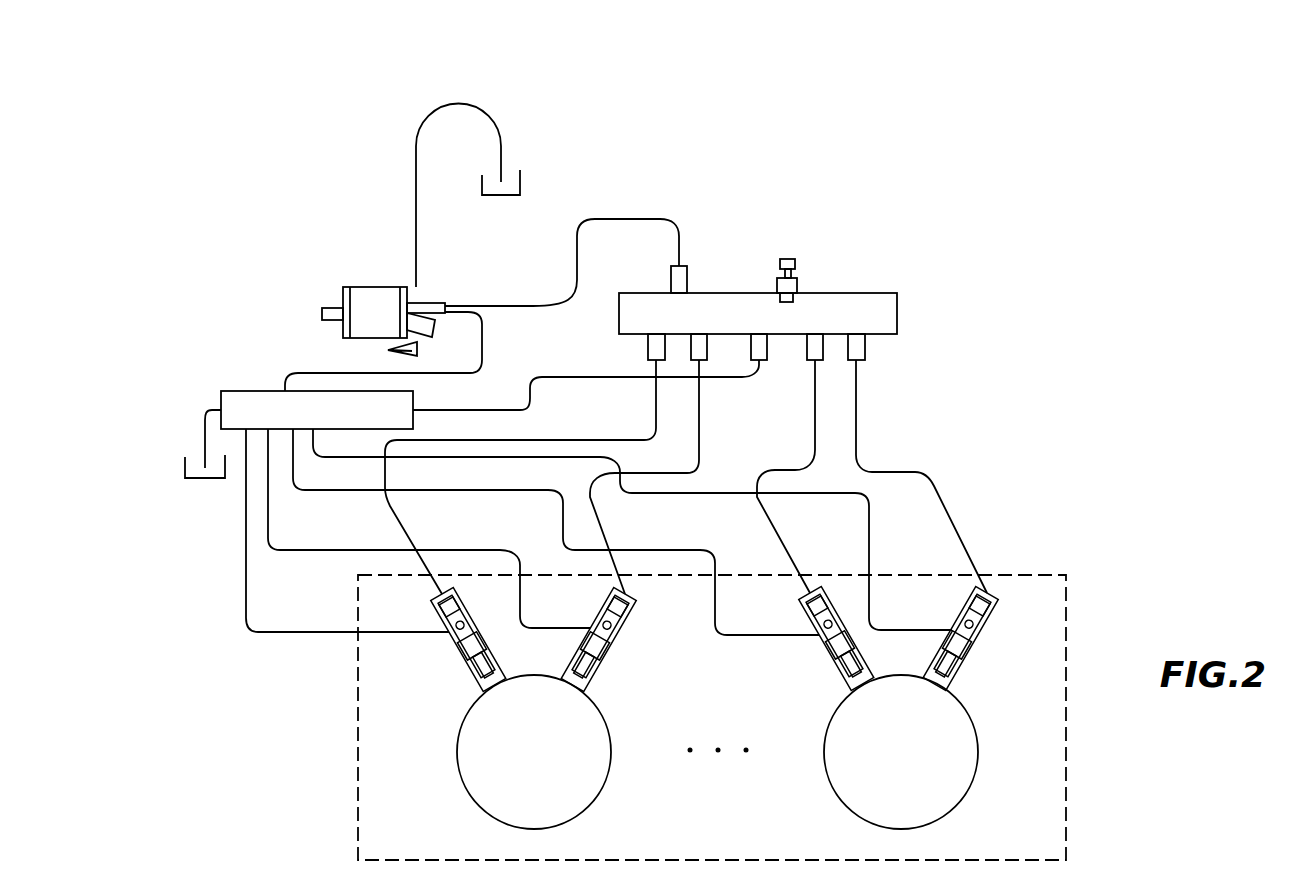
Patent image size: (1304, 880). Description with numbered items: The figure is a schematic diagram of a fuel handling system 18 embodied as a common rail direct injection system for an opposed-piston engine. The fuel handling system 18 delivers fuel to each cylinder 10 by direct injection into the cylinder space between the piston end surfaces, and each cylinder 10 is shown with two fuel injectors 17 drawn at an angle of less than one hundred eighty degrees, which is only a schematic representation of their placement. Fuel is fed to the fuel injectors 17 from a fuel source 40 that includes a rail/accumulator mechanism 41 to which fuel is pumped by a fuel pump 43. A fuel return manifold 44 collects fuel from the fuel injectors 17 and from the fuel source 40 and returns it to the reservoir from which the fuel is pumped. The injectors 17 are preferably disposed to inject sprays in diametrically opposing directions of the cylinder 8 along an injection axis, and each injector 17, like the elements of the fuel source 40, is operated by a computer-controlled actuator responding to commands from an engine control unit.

The fuel handling system 18 is at (1003, 148).
The fuel pump 43 is at (373, 287).
The fuel source 40 is at (727, 242).
The rail/accumulator mechanism 41 is at (843, 293).
The fuel return manifold 44 is at (416, 392).
The fuel injector 17 is at (468, 665).
The cylinder 10 is at (588, 806).
The cylinder 8 is at (1066, 800).